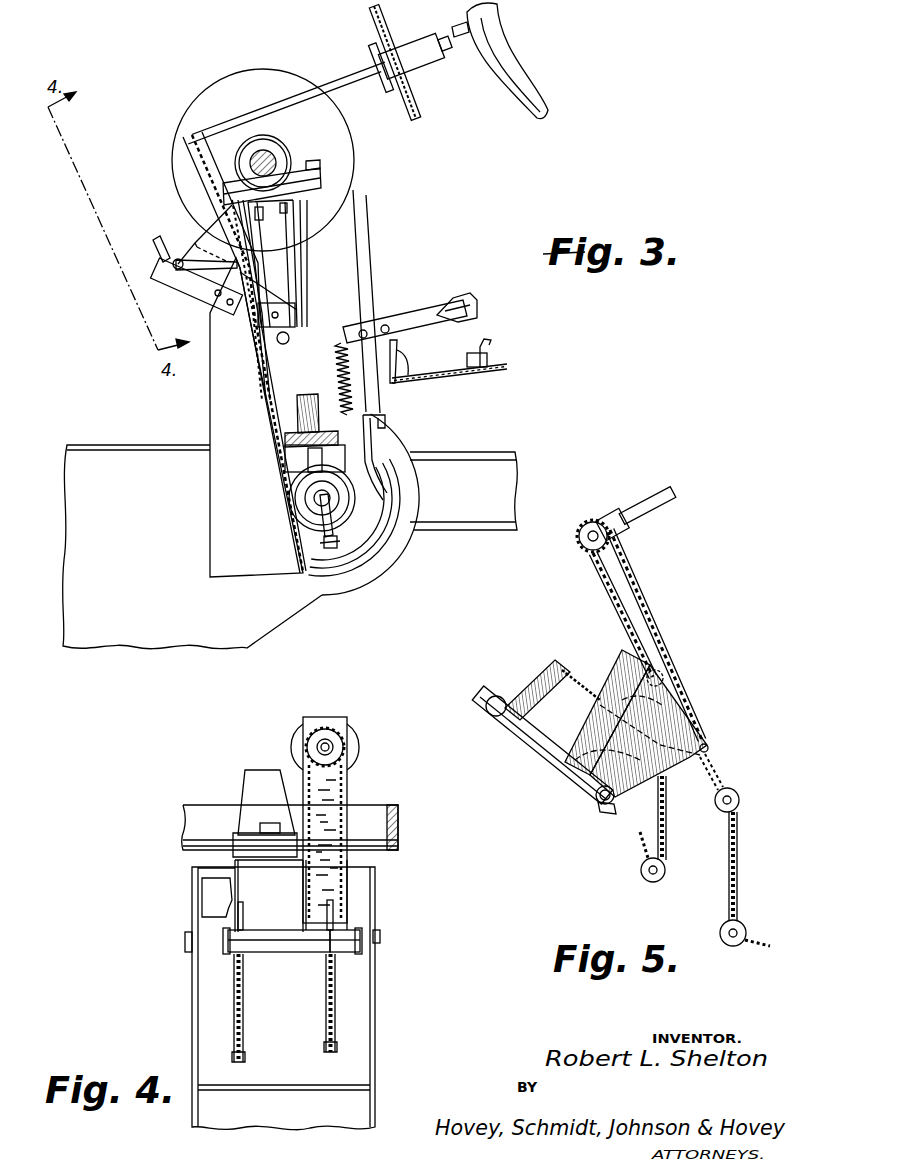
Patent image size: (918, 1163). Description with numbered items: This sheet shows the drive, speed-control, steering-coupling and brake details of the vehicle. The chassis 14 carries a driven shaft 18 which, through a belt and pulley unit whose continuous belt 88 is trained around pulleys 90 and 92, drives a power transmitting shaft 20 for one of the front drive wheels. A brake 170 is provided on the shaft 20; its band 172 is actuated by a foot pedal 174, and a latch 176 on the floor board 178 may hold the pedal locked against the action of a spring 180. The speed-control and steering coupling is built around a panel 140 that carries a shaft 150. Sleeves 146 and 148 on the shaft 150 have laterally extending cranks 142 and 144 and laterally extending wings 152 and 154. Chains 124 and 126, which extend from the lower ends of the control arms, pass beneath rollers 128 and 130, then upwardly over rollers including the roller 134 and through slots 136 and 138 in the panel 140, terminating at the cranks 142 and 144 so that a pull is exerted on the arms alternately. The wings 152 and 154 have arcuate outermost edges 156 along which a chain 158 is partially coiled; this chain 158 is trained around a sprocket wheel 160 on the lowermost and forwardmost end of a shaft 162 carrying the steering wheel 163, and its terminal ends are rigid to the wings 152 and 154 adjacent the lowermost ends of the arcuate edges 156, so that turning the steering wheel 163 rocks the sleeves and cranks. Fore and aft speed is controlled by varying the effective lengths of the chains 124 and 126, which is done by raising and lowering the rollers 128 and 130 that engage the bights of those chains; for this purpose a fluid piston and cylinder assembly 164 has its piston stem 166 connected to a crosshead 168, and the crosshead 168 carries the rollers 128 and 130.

In FIG. 3, the chassis 14 is at (488, 453).
In FIG. 3, the driven shaft 18 is at (277, 163).
In FIG. 4, the driven shaft 18 is at (378, 813).
In FIG. 3, the power transmitting shaft 20 is at (317, 502).
In FIG. 3, the continuous belt 88 is at (363, 273).
In FIG. 3, the pulley 90 is at (262, 72).
In FIG. 3, the pulley 92 is at (378, 585).
In FIG. 4, the chain 124 is at (234, 961).
In FIG. 5, the chain 124 is at (670, 830).
In FIG. 3, the chain 126 is at (263, 297).
In FIG. 4, the chain 126 is at (326, 959).
In FIG. 5, the chain 126 is at (738, 858).
In FIG. 5, the roller 128 is at (652, 890).
In FIG. 5, the roller 130 is at (736, 948).
In FIG. 3, the roller 134 is at (282, 342).
In FIG. 5, the roller 134 is at (715, 803).
In FIG. 4, the slot 136 is at (240, 1058).
In FIG. 4, the slot 138 is at (317, 1054).
In FIG. 3, the panel 140 is at (268, 391).
In FIG. 4, the panel 140 is at (358, 981).
In FIG. 4, the crank 142 is at (240, 922).
In FIG. 5, the crank 142 is at (541, 690).
In FIG. 4, the crank 144 is at (334, 897).
In FIG. 5, the crank 144 is at (560, 760).
In FIG. 4, the sleeve 146 is at (270, 945).
In FIG. 5, the sleeve 146 is at (516, 730).
In FIG. 4, the sleeve 148 is at (344, 933).
In FIG. 5, the sleeve 148 is at (593, 792).
In FIG. 3, the shaft 150 is at (200, 280).
In FIG. 4, the shaft 150 is at (381, 940).
In FIG. 5, the shaft 150 is at (610, 817).
In FIG. 4, the wing 152 is at (303, 893).
In FIG. 5, the wing 152 is at (611, 667).
In FIG. 3, the wing 154 is at (207, 302).
In FIG. 4, the wing 154 is at (348, 885).
In FIG. 5, the wing 154 is at (681, 733).
In FIG. 5, the arcuate outermost edge 156 is at (663, 676).
In FIG. 3, the chain 158 is at (188, 170).
In FIG. 4, the chain 158 is at (348, 780).
In FIG. 5, the chain 158 is at (648, 603).
In FIG. 4, the sprocket wheel 160 is at (341, 747).
In FIG. 5, the sprocket wheel 160 is at (592, 551).
In FIG. 3, the shaft 162 is at (335, 88).
In FIG. 4, the shaft 162 is at (332, 742).
In FIG. 5, the shaft 162 is at (650, 500).
In FIG. 3, the steering wheel 163 is at (522, 67).
In FIG. 3, the fluid piston and cylinder assembly 164 is at (281, 242).
In FIG. 3, the piston stem 166 is at (313, 453).
In FIG. 3, the crosshead 168 is at (293, 413).
In FIG. 3, the brake 170 is at (372, 552).
In FIG. 3, the band 172 is at (385, 460).
In FIG. 3, the foot pedal 174 is at (415, 320).
In FIG. 3, the latch 176 is at (492, 334).
In FIG. 3, the floor board 178 is at (500, 369).
In FIG. 3, the spring 180 is at (338, 368).